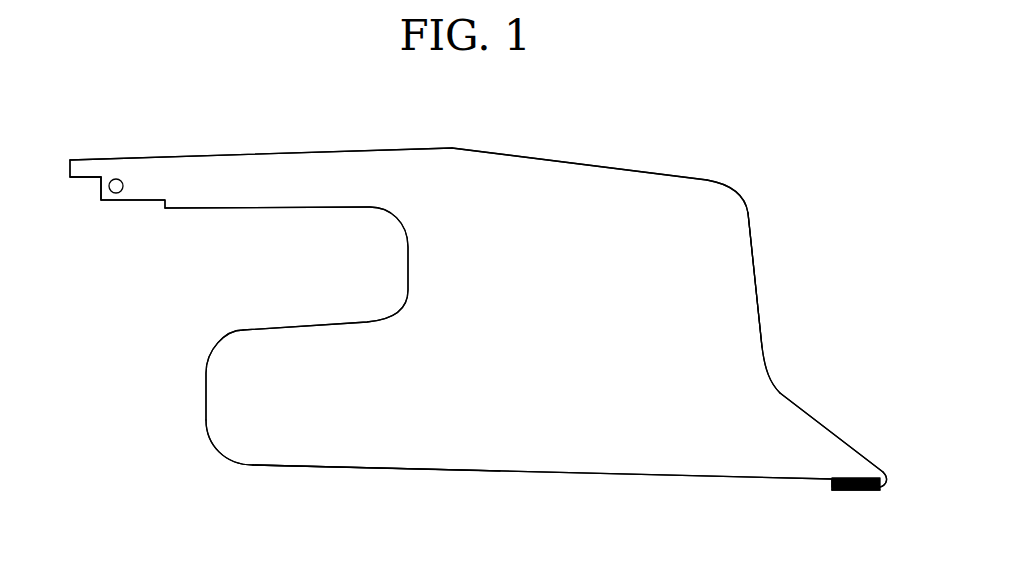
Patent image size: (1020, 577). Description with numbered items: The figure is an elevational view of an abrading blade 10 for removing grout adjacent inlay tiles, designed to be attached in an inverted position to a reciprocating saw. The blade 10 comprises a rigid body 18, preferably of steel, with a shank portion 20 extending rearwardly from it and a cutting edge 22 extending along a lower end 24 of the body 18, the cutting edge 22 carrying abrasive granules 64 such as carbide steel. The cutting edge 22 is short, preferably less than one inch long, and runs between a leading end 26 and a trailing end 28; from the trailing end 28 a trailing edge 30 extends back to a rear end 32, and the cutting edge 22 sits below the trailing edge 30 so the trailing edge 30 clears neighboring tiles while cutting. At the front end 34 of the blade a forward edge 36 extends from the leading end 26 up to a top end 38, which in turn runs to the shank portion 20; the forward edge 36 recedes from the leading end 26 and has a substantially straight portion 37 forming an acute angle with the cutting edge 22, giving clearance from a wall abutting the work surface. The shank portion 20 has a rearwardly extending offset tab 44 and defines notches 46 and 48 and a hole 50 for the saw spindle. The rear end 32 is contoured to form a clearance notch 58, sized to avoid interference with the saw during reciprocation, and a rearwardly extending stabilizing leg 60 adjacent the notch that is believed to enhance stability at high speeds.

The abrading blade 10 is at (588, 122).
The rigid body 18 is at (698, 208).
The shank portion 20 is at (250, 168).
The cutting edge 22 is at (860, 493).
The lower end 24 is at (492, 472).
The leading end 26 is at (878, 490).
The trailing end 28 is at (832, 485).
The trailing edge 30 is at (368, 468).
The rear end 32 is at (206, 372).
The front end 34 is at (765, 345).
The forward edge 36 is at (757, 283).
The substantially straight portion 37 is at (822, 425).
The top end 38 is at (625, 168).
The offset tab 44 is at (82, 158).
The notch 46 is at (87, 178).
The notch 48 is at (150, 200).
The hole 50 is at (123, 183).
The clearance notch 58 is at (280, 267).
The stabilizing leg 60 is at (220, 417).
The abrasive granules 64 is at (845, 491).